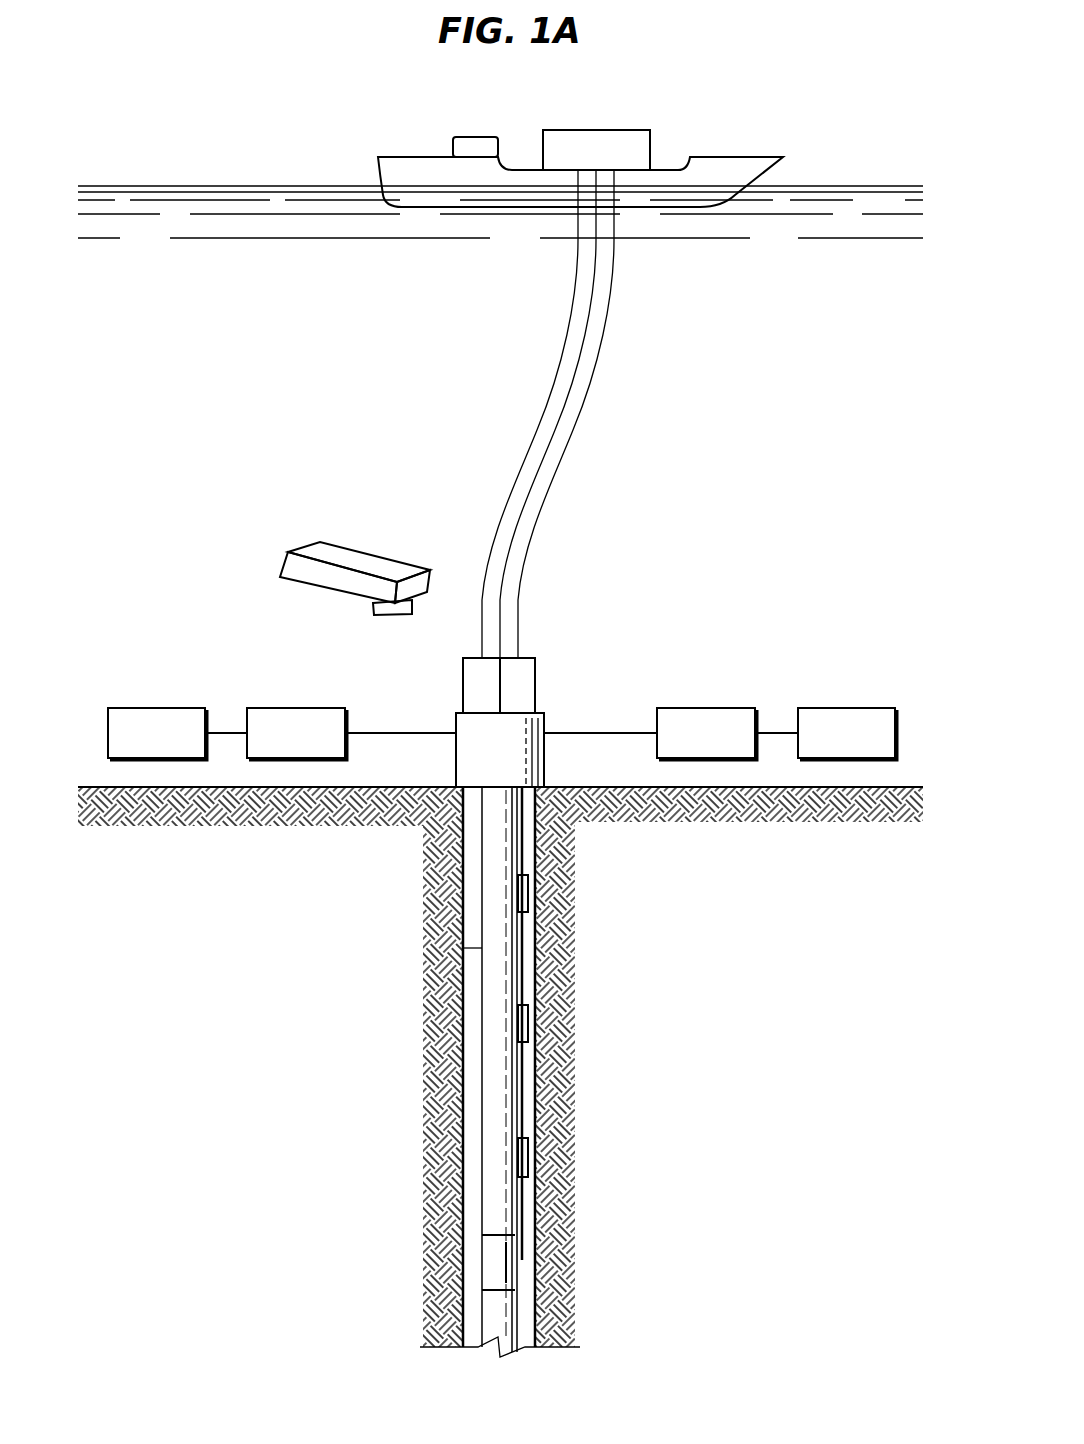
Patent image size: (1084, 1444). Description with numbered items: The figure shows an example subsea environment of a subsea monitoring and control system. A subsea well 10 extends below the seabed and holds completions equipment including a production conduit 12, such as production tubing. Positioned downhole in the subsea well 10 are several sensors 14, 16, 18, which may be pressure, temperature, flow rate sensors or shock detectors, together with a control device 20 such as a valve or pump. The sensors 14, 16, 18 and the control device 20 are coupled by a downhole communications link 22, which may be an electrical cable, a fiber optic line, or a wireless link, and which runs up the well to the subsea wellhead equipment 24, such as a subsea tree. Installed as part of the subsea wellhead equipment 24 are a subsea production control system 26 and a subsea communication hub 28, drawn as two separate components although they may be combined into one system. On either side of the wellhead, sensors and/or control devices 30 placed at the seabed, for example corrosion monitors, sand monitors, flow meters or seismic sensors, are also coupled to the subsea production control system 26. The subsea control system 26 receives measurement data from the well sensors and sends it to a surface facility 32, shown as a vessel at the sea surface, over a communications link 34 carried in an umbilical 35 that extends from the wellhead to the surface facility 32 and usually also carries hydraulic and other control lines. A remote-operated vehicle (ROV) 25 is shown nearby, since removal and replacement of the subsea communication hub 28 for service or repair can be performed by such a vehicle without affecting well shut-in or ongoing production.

The subsea well 10 is at (462, 903).
The production conduit 12 is at (463, 948).
The sensor 14 is at (525, 890).
The sensor 16 is at (525, 1022).
The sensor 18 is at (525, 1153).
The control device 20 is at (490, 1263).
The downhole communications link 22 is at (523, 843).
The subsea wellhead equipment 24 is at (545, 772).
The remote-operated vehicle (ROV) 25 is at (345, 550).
The subsea production control system 26 is at (472, 678).
The subsea communication hub 28 is at (528, 682).
The sensors and/or control devices 30 is at (861, 747).
The surface facility 32 is at (723, 155).
The communications link 34 is at (560, 400).
The umbilical 35 is at (602, 330).